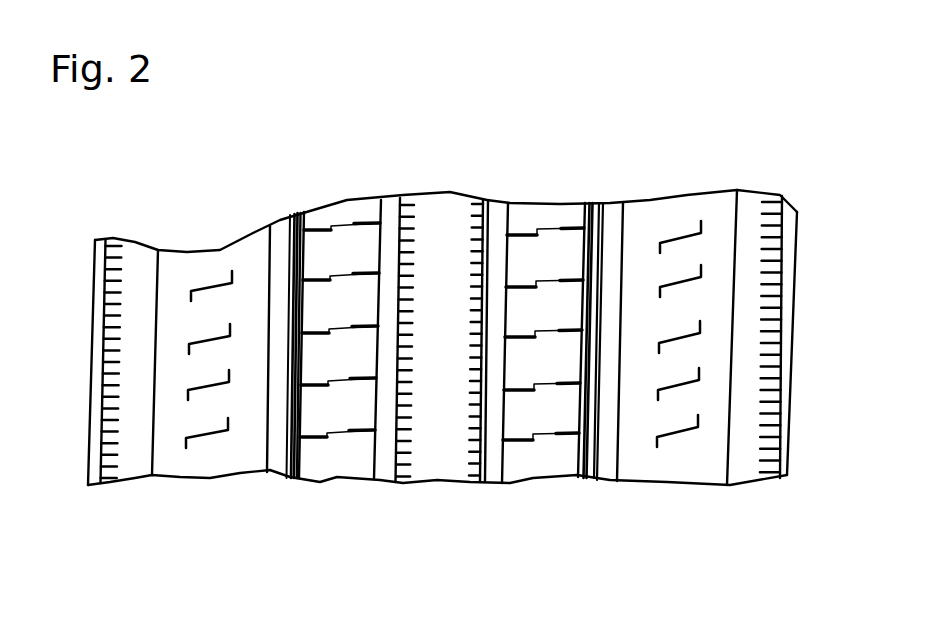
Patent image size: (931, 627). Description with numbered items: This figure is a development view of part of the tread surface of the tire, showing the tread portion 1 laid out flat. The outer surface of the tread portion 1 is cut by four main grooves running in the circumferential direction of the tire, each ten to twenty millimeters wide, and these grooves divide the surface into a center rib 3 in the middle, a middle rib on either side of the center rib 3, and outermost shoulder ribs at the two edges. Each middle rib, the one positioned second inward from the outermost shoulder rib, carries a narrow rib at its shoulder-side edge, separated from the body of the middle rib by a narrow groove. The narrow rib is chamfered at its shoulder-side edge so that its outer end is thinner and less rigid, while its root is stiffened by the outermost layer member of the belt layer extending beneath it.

The tread portion 1 is at (197, 236).
The center rib 3 is at (427, 463).